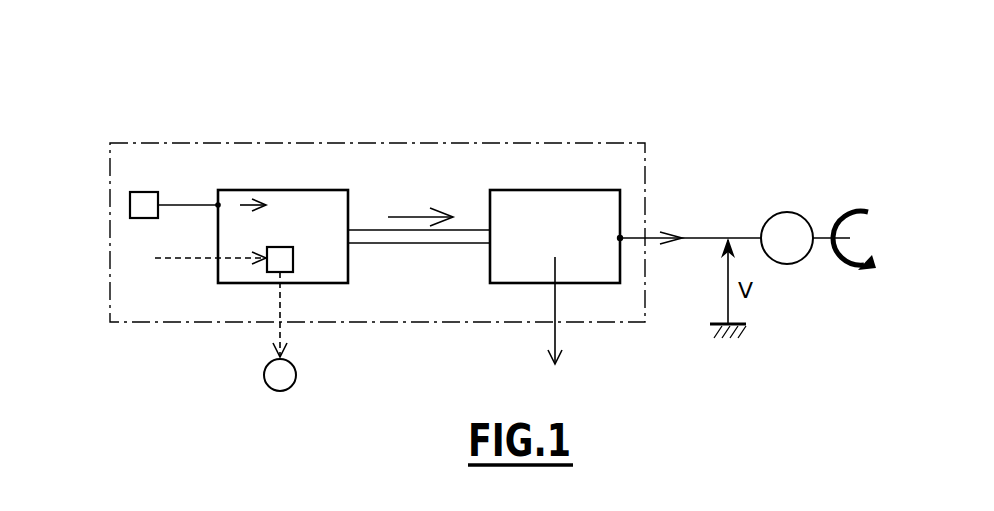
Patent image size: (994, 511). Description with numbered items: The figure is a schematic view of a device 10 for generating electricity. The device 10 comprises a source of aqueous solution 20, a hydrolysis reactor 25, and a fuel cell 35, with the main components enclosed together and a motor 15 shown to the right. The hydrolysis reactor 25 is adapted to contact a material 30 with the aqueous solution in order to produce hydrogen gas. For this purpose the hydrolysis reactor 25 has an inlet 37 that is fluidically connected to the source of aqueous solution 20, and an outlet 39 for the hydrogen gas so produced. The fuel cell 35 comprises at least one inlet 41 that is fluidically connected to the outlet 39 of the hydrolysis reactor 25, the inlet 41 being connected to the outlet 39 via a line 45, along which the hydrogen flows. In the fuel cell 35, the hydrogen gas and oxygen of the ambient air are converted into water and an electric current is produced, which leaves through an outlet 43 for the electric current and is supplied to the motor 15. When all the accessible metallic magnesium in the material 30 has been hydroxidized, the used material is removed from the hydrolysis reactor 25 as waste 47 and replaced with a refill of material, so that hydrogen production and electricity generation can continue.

The device for generating electricity 10 is at (134, 84).
The motor 15 is at (791, 212).
The source of aqueous solution 20 is at (130, 200).
The hydrolysis reactor 25 is at (288, 190).
The material 30 is at (284, 247).
The fuel cell 35 is at (558, 190).
The inlet 37 is at (218, 205).
The outlet 39 is at (348, 231).
The inlet 41 is at (490, 231).
The outlet 43 is at (622, 240).
The line 45 is at (425, 244).
The waste 47 is at (285, 383).